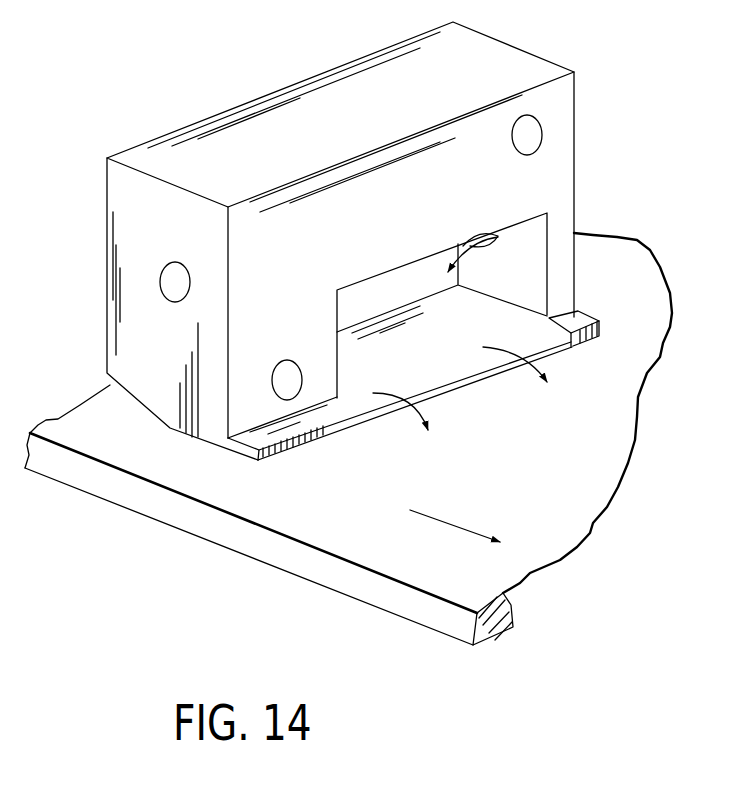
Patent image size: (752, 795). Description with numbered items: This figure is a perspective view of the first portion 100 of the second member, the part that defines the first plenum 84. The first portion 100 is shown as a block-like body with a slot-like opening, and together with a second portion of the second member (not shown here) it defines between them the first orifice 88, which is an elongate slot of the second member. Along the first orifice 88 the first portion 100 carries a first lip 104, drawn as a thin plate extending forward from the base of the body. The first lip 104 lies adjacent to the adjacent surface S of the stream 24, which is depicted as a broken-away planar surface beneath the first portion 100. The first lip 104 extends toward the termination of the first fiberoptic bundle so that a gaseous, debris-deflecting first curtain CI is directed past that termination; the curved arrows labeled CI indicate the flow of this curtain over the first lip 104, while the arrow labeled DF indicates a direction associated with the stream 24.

The first portion 100 is at (235, 128).
The first plenum 84 is at (536, 246).
The first orifice 88 is at (574, 317).
The first lip 104 is at (448, 370).
The stream 24 is at (460, 625).
The adjacent surface S is at (627, 358).
The first curtain CI is at (403, 408).
The force direction arrow DF is at (452, 520).